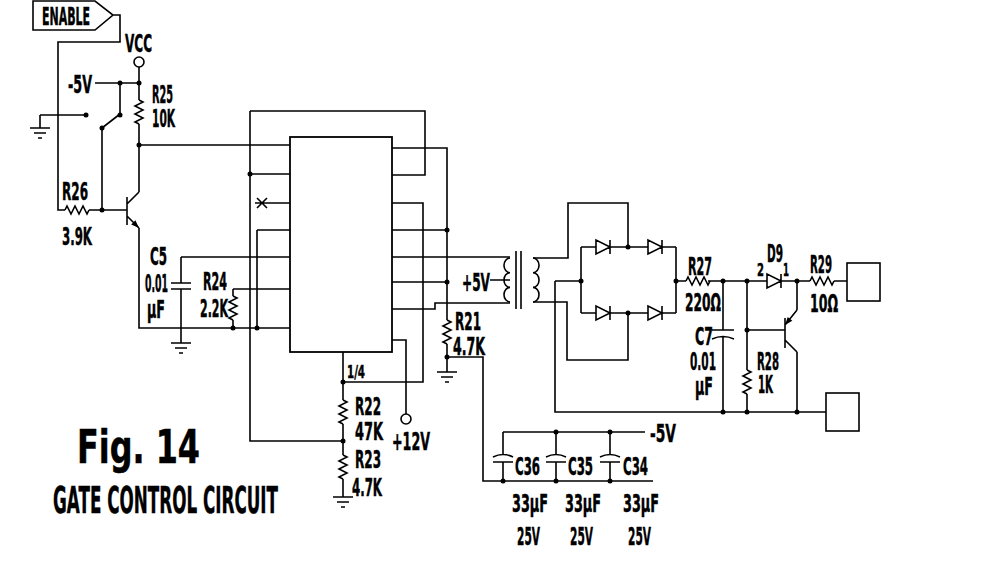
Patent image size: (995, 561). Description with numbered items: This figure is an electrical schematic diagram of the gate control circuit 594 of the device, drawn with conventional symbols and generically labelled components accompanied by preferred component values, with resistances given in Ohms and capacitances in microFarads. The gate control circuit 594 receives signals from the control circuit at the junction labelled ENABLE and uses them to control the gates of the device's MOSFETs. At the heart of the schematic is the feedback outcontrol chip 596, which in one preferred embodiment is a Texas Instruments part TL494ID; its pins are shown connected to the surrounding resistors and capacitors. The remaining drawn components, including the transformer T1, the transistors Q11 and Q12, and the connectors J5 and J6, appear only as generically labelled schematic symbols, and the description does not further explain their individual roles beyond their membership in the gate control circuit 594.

The feedback outcontrol chip 596 is at (347, 138).
The gate control circuit 594 is at (629, 183).
The isolation transformer T1 is at (519, 294).
The enable switching transistor Q11 is at (144, 198).
The gate drive transistor Q12 is at (805, 326).
The gate output connector J5 is at (877, 284).
The isolated ground connector J6 is at (845, 413).